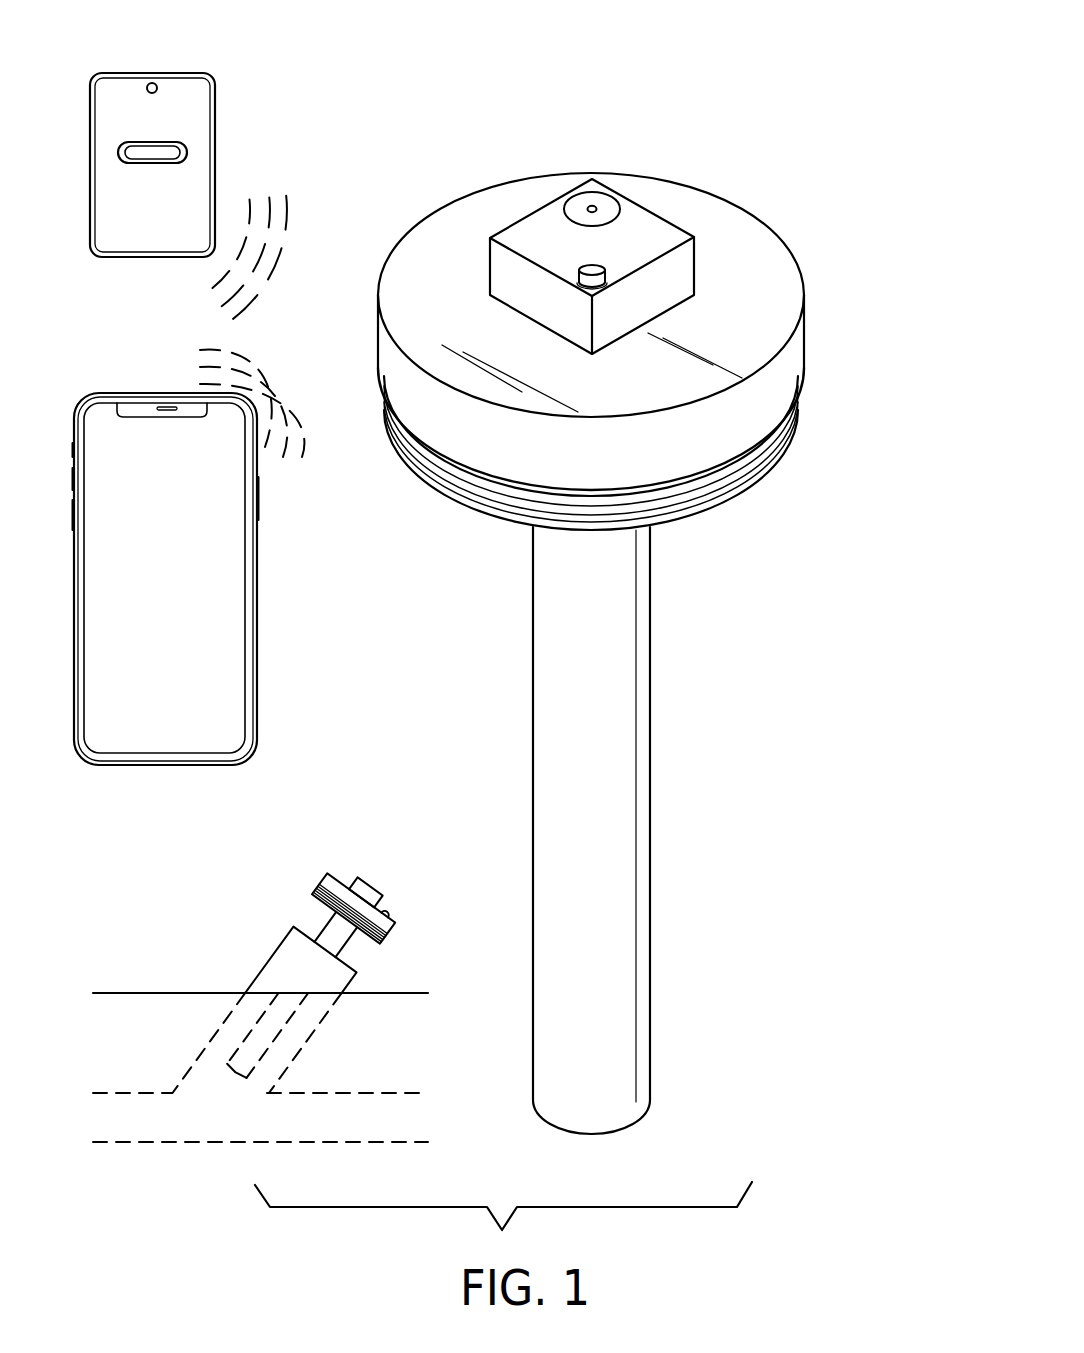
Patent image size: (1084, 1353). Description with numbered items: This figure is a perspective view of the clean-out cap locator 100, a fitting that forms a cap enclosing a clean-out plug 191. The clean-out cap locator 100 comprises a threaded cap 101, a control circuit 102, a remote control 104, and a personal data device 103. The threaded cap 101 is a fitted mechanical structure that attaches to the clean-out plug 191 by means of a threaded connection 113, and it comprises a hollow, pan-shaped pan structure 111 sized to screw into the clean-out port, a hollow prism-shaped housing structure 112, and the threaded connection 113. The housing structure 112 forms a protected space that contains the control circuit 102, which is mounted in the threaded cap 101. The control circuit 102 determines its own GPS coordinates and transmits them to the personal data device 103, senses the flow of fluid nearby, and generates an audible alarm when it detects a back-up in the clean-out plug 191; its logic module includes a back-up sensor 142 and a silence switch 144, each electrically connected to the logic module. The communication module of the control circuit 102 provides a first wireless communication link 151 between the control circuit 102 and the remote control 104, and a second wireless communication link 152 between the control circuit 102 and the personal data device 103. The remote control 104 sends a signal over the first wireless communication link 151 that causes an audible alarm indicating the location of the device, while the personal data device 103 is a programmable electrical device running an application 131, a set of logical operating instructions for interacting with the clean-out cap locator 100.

The clean-out cap locator 100 is at (793, 71).
The threaded cap 101 is at (816, 251).
The control circuit 102 is at (678, 203).
The personal data device 103 is at (255, 593).
The remote control 104 is at (197, 98).
The pan structure 111 is at (797, 342).
The housing structure 112 is at (533, 297).
The threaded connection 113 is at (767, 457).
The application 131 is at (197, 503).
The back-up sensor 142 is at (613, 708).
The silence switch 144 is at (593, 266).
The first wireless communication link 151 is at (272, 215).
The second wireless communication link 152 is at (280, 388).
The clean-out plug 191 is at (262, 965).